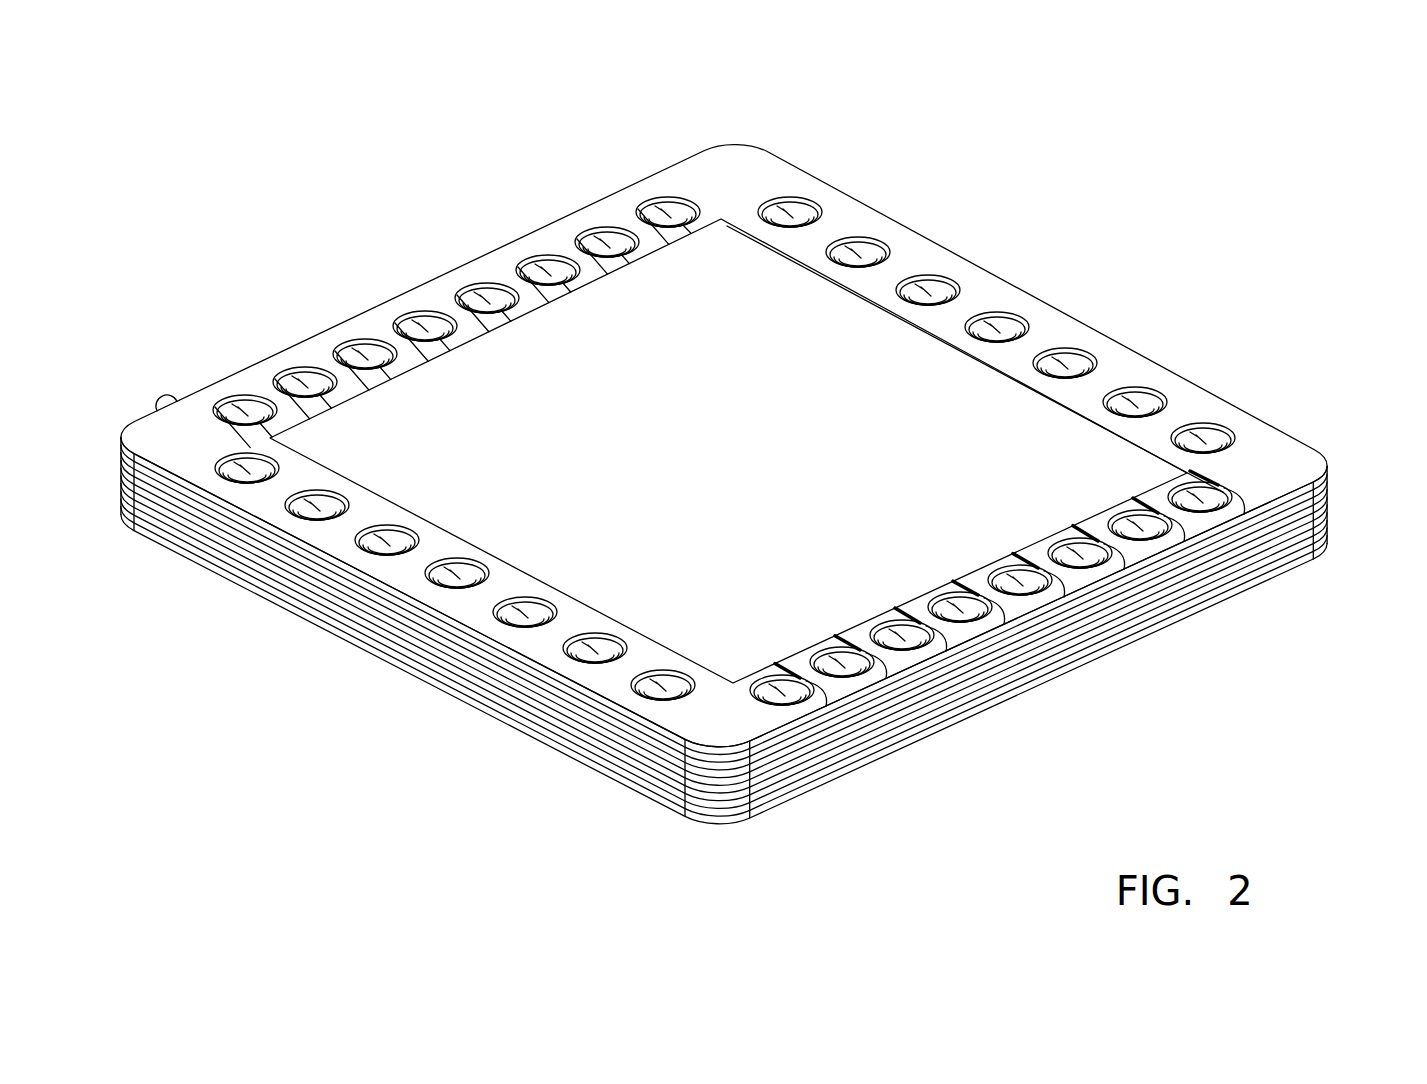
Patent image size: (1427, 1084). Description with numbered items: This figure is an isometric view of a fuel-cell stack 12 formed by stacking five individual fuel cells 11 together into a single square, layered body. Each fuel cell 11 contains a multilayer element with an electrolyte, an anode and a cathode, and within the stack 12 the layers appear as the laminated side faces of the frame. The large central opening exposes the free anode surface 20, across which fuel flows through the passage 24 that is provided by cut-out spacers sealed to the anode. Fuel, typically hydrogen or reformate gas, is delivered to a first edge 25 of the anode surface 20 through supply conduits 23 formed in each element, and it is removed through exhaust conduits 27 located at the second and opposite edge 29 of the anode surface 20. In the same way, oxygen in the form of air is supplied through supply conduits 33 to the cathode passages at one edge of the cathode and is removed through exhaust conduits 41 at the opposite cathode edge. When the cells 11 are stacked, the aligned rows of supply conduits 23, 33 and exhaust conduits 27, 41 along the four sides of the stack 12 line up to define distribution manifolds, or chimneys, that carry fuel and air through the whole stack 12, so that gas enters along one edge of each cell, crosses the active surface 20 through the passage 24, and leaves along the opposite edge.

The fuel cell 11 is at (1338, 456).
The stack 12 is at (1214, 148).
The anode surface 20 is at (664, 439).
The supply conduits 23 is at (1270, 566).
The passage 24 is at (1087, 455).
The first edge 25 is at (995, 560).
The exhaust conduits 27 is at (303, 383).
The second edge 29 is at (660, 250).
The supply conduits 33 is at (300, 500).
The exhaust conduits 41 is at (928, 290).